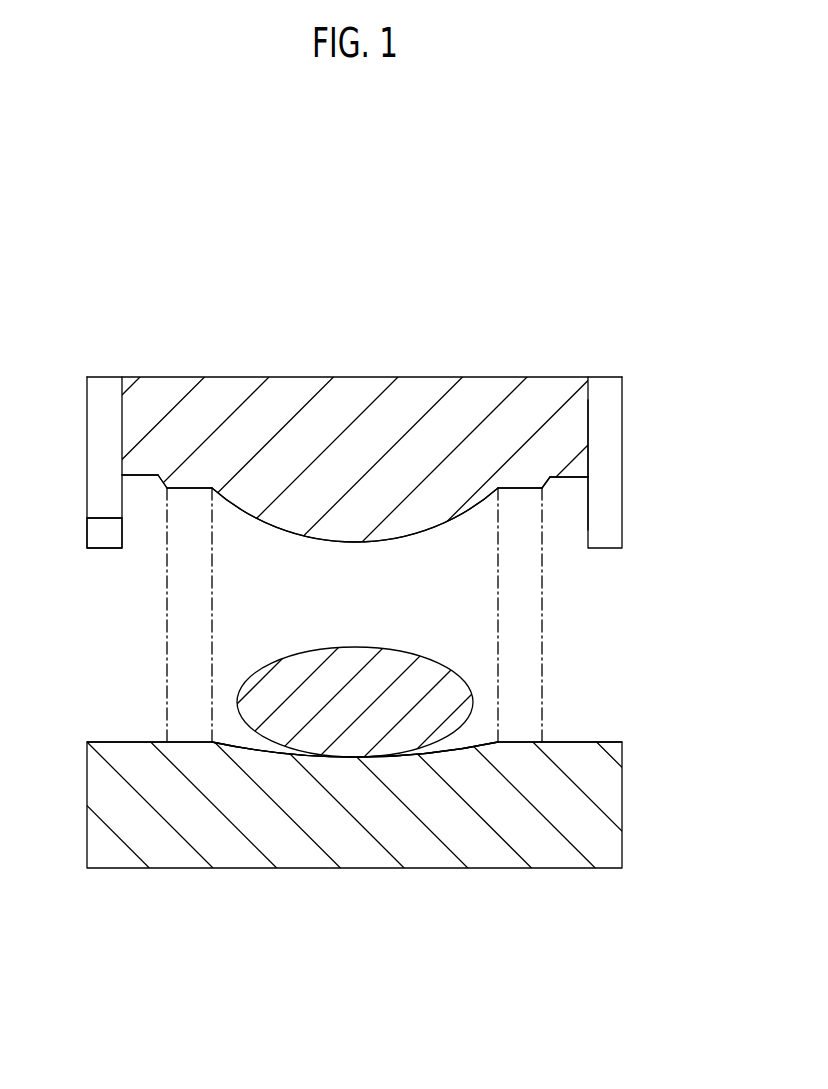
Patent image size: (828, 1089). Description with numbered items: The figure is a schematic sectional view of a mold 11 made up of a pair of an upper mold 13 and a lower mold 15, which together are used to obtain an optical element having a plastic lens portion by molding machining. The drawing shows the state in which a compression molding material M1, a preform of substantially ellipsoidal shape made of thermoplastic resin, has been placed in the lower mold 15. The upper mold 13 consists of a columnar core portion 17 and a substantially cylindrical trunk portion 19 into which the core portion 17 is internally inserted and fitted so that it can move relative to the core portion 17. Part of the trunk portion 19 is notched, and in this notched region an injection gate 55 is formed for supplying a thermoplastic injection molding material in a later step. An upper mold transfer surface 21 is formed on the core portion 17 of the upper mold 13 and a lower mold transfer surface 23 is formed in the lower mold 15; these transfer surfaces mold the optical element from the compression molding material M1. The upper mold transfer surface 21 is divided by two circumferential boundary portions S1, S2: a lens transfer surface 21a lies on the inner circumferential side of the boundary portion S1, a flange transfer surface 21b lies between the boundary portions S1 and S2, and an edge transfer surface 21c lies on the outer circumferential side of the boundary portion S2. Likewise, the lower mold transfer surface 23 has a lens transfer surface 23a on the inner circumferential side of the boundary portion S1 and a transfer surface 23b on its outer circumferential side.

The mold 11 is at (596, 344).
The upper mold 13 is at (625, 437).
The lower mold 15 is at (629, 807).
The core portion 17 is at (482, 391).
The trunk portion 19 is at (610, 408).
The upper mold transfer surface 21 is at (461, 517).
The lens transfer surface 21a is at (378, 544).
The flange transfer surface 21b is at (188, 490).
The edge transfer surface 21c is at (158, 476).
The lower mold transfer surface 23 is at (473, 740).
The lens transfer surface 23a is at (243, 748).
The transfer surface 23b is at (132, 740).
The injection gate 55 is at (105, 521).
The compression molding material M1 is at (310, 660).
The circumferential boundary portion S1 is at (212, 487).
The circumferential boundary portion S2 is at (166, 487).